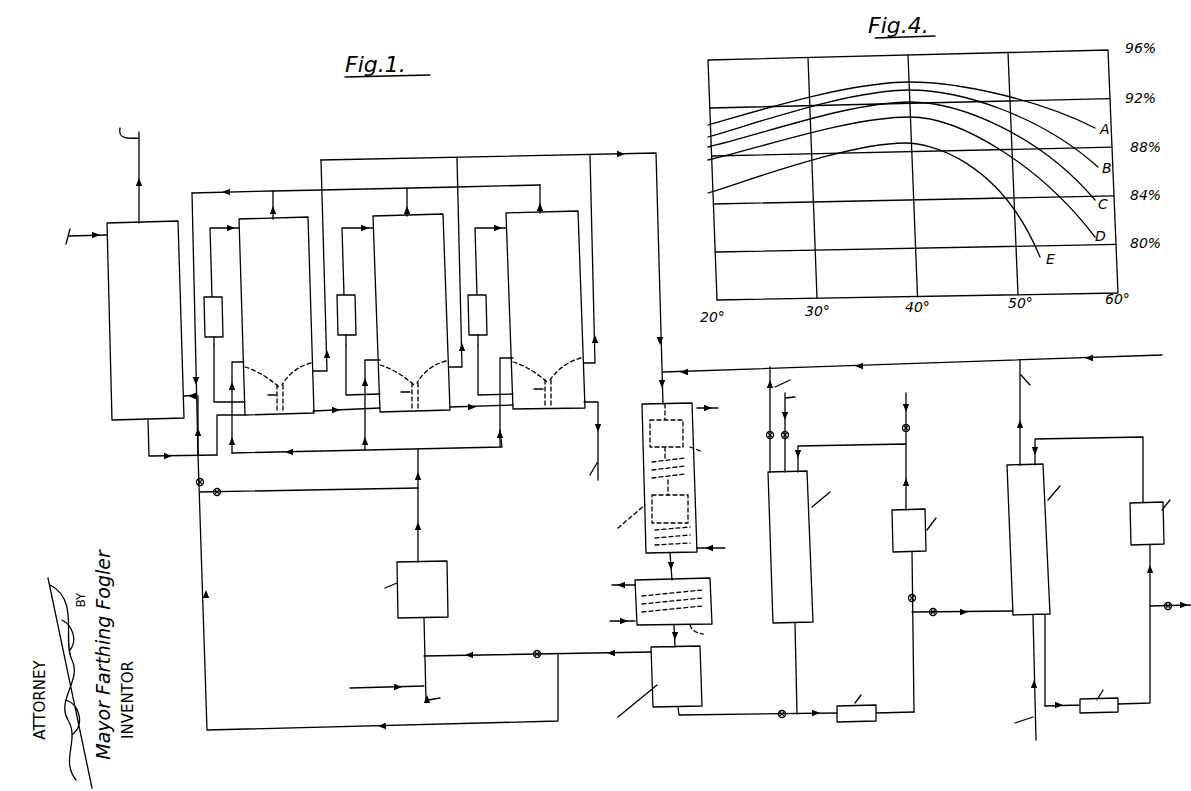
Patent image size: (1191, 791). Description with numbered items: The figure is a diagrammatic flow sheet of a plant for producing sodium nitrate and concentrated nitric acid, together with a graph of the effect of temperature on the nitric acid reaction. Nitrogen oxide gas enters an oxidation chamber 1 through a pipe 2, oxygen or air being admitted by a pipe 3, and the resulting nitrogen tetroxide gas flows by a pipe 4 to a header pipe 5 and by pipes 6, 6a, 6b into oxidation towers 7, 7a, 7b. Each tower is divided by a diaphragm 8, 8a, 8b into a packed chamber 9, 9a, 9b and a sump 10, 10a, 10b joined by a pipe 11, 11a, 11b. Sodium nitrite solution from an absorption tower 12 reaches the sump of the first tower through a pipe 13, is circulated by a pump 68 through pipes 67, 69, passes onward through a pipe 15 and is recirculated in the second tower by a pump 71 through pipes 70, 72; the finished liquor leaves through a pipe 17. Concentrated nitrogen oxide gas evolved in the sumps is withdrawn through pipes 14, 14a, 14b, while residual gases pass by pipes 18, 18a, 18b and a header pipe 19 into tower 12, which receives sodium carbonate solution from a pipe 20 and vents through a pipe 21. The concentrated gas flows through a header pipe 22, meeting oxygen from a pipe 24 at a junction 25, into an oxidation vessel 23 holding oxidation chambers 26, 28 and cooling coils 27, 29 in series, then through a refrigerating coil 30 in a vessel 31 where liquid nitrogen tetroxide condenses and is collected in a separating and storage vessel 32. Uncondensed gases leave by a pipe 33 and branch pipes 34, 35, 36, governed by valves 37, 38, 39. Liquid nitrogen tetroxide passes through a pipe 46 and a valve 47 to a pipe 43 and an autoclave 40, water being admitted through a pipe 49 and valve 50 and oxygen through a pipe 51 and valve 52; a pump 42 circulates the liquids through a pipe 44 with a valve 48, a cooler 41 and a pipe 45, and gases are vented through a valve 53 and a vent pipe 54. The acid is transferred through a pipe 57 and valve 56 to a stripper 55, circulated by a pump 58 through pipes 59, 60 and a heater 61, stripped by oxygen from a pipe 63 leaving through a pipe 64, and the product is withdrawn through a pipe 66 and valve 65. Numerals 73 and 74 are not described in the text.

The oxidation chamber 1 is at (397, 596).
The pipe 2 is at (421, 635).
The pipe 3 is at (371, 690).
The pipe 4 is at (419, 503).
The header pipe 5 is at (459, 449).
The pipe 6 is at (238, 428).
The pipe 6a is at (368, 428).
The pipe 6b is at (503, 428).
The oxidation tower 7 is at (240, 319).
The oxidation tower 7a is at (356, 296).
The oxidation tower 7b is at (491, 294).
The diaphragm 8 is at (289, 370).
The diaphragm 8a is at (422, 368).
The diaphragm 8b is at (556, 366).
The chamber 9 is at (276, 316).
The chamber 9a is at (411, 313).
The chamber 9b is at (545, 310).
The sump 10 is at (293, 399).
The sump 10a is at (431, 396).
The sump 10b is at (564, 394).
The pipe 11 is at (265, 394).
The pipe 11a is at (398, 391).
The pipe 11b is at (531, 388).
The absorption tower 12 is at (107, 302).
The pipe 13 is at (148, 436).
The pipe 14 is at (322, 206).
The pipe 14a is at (458, 206).
The pipe 14b is at (598, 206).
The pipe 15 is at (326, 415).
The pipe 17 is at (591, 403).
The pipe 18 is at (268, 202).
The pipe 18a is at (404, 198).
The pipe 18b is at (538, 190).
The header pipe 19 is at (367, 188).
The pipe 20 is at (61, 228).
The pipe 21 is at (138, 162).
The header pipe 22 is at (503, 162).
The oxidation vessel 23 is at (644, 462).
The pipe 24 is at (912, 362).
The junction 25 is at (664, 365).
The oxidation chamber 26 is at (652, 435).
The cooling coil 27 is at (650, 478).
The oxidation chamber 28 is at (706, 503).
The cooling coil 29 is at (716, 521).
The refrigerating coil 30 is at (716, 576).
The vessel 31 is at (714, 596).
The separating and storage vessel 32 is at (700, 684).
The pipe 33 is at (202, 561).
The branch pipe 34 is at (453, 656).
The branch pipe 35 is at (298, 495).
The branch pipe 36 is at (197, 437).
The valve 37 is at (536, 659).
The valve 38 is at (218, 497).
The valve 39 is at (196, 484).
The autoclave 40 is at (807, 596).
The cooler 41 is at (891, 532).
The pump 42 is at (857, 725).
The pipe 43 is at (786, 668).
The pipe 44 is at (915, 675).
The pipe 45 is at (908, 462).
The pipe 46 is at (748, 716).
The valve 47 is at (780, 719).
The valve 48 is at (907, 598).
The pipe 49 is at (904, 406).
The valve 50 is at (911, 430).
The pipe 51 is at (790, 420).
The valve 52 is at (793, 433).
The valve 53 is at (770, 431).
The vent pipe 54 is at (768, 443).
The stripper 55 is at (1008, 560).
The valve 56 is at (935, 609).
The pipe 57 is at (952, 618).
The pump 58 is at (1086, 718).
The pipe 59 is at (1047, 636).
The pipe 60 is at (1147, 578).
The heater 61 is at (1128, 528).
The pipe 63 is at (1030, 650).
The pipe 64 is at (1016, 440).
The valve 65 is at (1168, 602).
The pipe 66 is at (1170, 612).
The pipe 67 is at (231, 374).
The pump 68 is at (219, 340).
The pipe 69 is at (215, 236).
The pipe 70 is at (367, 349).
The pump 71 is at (352, 339).
The pipe 72 is at (347, 236).
The pump discharge line 73 is at (479, 349).
The pump outlet 74 is at (482, 331).